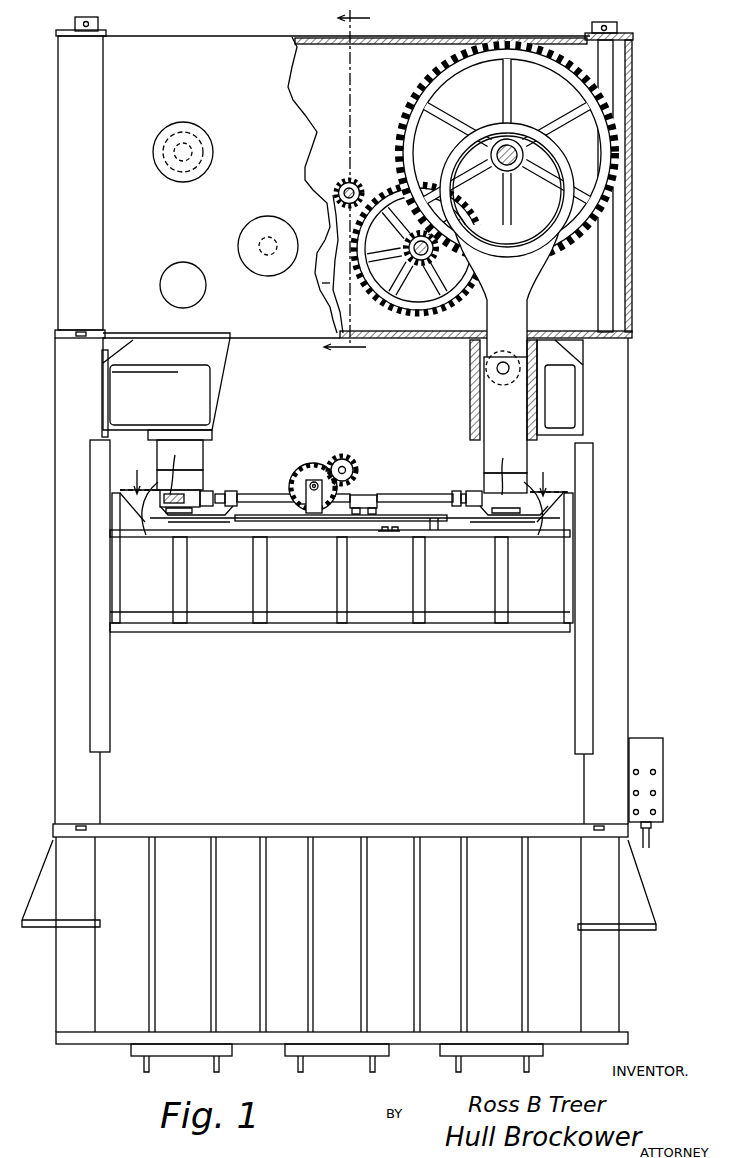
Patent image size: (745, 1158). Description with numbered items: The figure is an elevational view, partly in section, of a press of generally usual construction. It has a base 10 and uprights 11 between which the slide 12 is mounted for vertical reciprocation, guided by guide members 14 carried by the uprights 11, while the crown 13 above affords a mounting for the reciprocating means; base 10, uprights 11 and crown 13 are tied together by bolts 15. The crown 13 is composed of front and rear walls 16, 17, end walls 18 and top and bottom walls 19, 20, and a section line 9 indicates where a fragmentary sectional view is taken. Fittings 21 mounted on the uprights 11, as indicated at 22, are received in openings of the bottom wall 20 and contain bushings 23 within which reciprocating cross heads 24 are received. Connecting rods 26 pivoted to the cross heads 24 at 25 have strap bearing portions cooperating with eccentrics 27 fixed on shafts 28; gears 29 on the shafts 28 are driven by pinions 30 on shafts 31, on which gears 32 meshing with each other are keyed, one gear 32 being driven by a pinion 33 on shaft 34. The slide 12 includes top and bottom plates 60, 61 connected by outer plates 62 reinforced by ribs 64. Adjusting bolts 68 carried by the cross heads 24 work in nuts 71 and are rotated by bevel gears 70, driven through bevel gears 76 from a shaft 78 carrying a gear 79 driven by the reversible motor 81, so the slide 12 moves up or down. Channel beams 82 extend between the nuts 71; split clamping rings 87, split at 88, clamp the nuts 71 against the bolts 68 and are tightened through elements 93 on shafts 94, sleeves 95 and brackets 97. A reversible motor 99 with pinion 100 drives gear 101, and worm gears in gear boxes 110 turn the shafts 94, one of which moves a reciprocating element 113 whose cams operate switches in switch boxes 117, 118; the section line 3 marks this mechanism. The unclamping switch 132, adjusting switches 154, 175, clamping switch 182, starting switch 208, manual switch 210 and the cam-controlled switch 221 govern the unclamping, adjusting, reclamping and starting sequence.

The section line 3— 3 is at (344, 476).
The section line 9— 9 is at (350, 184).
The base 10 is at (272, 824).
The uprights 11 is at (640, 600).
The slide 12 is at (362, 633).
The crown 13 is at (104, 210).
The guide members 14 is at (90, 550).
The bolts 15 is at (614, 236).
The front wall 16 is at (296, 120).
The rear wall 17 is at (413, 47).
The end walls 18 is at (633, 172).
The top wall 19 is at (356, 50).
The bottom wall 20 is at (418, 338).
The fittings 21 is at (198, 387).
The mounting of fittings 22 is at (102, 421).
The bushings 23 is at (470, 400).
The cross heads 24 is at (204, 447).
The pivot 25 is at (503, 386).
The connecting rods 26 is at (520, 280).
The eccentrics 27 is at (556, 211).
The shafts 28 is at (185, 147).
The gears 29 is at (412, 99).
The pinions 30 is at (421, 262).
The shafts 31 is at (268, 236).
The gears 32 is at (322, 285).
The pinion 33 is at (355, 182).
The shaft 34 is at (345, 188).
The top plate 60 is at (331, 538).
The bottom plate 61 is at (497, 633).
The outer plates 62 is at (238, 614).
The ribs 64 is at (253, 588).
The adjusting bolts 68 is at (148, 536).
The bevel gears 70 is at (207, 523).
The nuts 71 is at (206, 476).
The bevel gears 76 is at (548, 512).
The shaft 78 is at (316, 523).
The gear 79 is at (436, 532).
The reversible motor 81 is at (398, 533).
The channel beams 82 is at (414, 493).
The clamping rings 87 is at (172, 470).
The split 88 is at (500, 470).
The elements 93 is at (286, 488).
The shafts 94 is at (263, 494).
The sleeve 95 is at (198, 492).
The brackets 97 is at (455, 490).
The reversible motor 99 is at (342, 455).
The pinion 100 is at (352, 476).
The gear 101 is at (305, 470).
The gear boxes 110 is at (304, 507).
The reciprocating element 113 is at (370, 494).
The switch box 117 is at (352, 511).
The switch box 118 is at (377, 511).
The unclamping switch 132 is at (633, 772).
The adjusting switch 154 is at (633, 793).
The adjusting switch 175 is at (656, 793).
The clamping switch 182 is at (656, 772).
The starting switch 208 is at (633, 812).
The manual switch 210 is at (656, 812).
The switch 221 is at (212, 153).